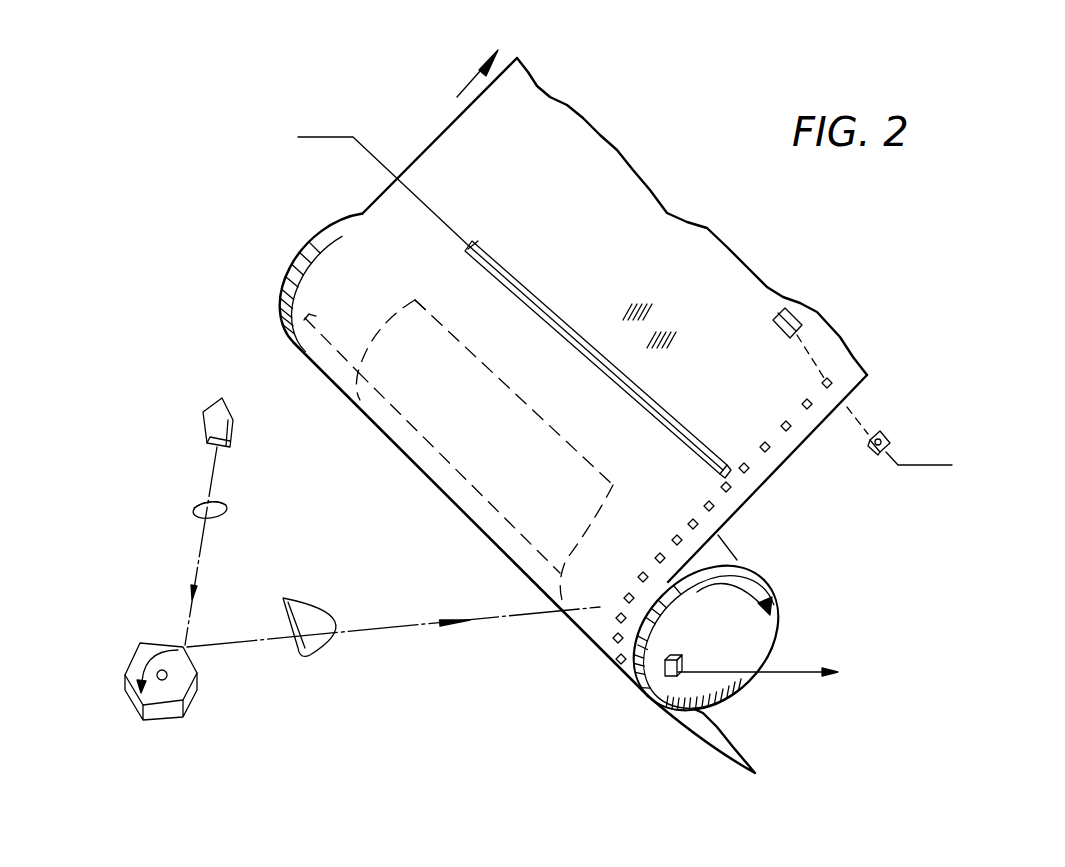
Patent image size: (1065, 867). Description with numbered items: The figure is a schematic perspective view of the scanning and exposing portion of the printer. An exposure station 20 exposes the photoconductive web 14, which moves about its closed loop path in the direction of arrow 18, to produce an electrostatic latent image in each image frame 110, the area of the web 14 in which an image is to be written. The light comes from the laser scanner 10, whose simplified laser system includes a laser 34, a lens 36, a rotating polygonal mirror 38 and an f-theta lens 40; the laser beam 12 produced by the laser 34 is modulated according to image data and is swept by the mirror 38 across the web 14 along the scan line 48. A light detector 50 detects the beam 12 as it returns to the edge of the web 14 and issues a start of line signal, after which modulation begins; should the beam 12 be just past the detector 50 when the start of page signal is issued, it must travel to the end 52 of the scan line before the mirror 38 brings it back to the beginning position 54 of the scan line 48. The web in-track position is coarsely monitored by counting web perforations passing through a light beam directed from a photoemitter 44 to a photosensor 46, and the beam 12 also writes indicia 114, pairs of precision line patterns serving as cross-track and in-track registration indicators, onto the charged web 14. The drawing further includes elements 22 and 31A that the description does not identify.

The laser scanner 10 is at (252, 571).
The laser beam 12 is at (506, 615).
The web 14 is at (546, 195).
The arrow 18 is at (470, 80).
The exposure station 20 is at (244, 275).
The drum end rim 22 is at (737, 562).
The bar 31A is at (699, 440).
The laser 34 is at (236, 422).
The lens 36 is at (228, 508).
The rotating polygonal mirror 38 is at (124, 690).
The f-theta lens 40 is at (314, 606).
The photoemitter 44 is at (776, 322).
The photosensor 46 is at (888, 437).
The scan line 48 is at (455, 462).
The light detector 50 is at (683, 658).
The end of the scan line 52 is at (306, 318).
The beginning position of the scan line 54 is at (660, 700).
The image frame 110 is at (416, 300).
The indicia 114 is at (658, 330).